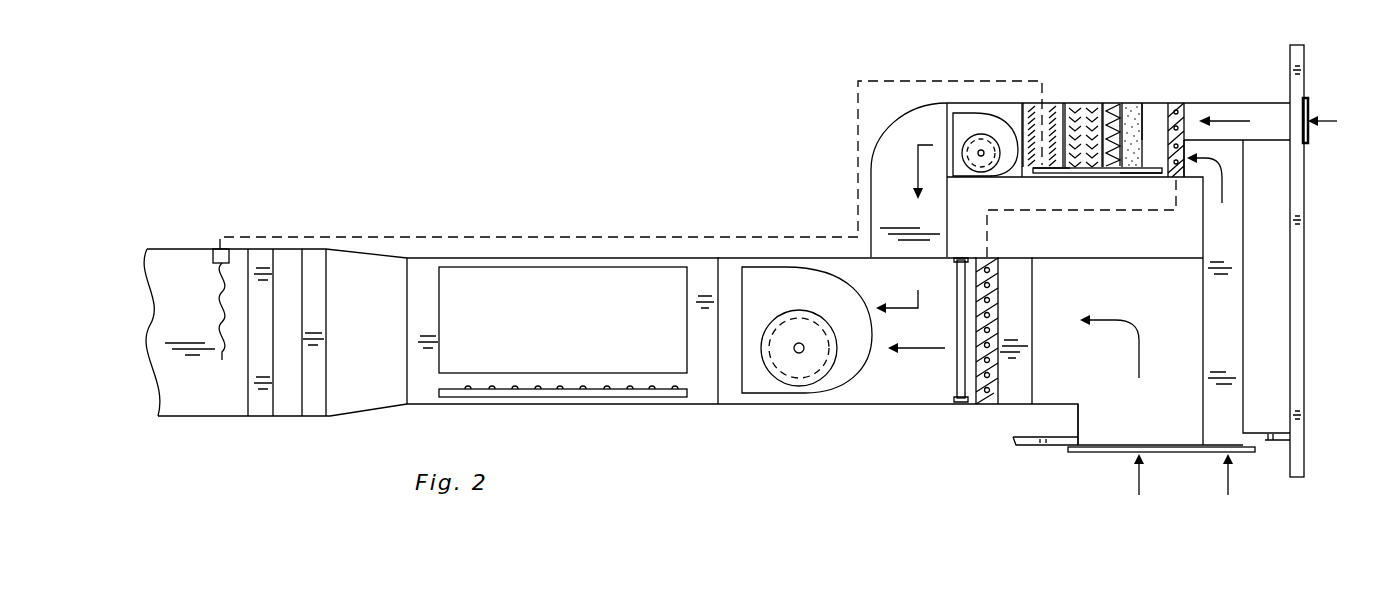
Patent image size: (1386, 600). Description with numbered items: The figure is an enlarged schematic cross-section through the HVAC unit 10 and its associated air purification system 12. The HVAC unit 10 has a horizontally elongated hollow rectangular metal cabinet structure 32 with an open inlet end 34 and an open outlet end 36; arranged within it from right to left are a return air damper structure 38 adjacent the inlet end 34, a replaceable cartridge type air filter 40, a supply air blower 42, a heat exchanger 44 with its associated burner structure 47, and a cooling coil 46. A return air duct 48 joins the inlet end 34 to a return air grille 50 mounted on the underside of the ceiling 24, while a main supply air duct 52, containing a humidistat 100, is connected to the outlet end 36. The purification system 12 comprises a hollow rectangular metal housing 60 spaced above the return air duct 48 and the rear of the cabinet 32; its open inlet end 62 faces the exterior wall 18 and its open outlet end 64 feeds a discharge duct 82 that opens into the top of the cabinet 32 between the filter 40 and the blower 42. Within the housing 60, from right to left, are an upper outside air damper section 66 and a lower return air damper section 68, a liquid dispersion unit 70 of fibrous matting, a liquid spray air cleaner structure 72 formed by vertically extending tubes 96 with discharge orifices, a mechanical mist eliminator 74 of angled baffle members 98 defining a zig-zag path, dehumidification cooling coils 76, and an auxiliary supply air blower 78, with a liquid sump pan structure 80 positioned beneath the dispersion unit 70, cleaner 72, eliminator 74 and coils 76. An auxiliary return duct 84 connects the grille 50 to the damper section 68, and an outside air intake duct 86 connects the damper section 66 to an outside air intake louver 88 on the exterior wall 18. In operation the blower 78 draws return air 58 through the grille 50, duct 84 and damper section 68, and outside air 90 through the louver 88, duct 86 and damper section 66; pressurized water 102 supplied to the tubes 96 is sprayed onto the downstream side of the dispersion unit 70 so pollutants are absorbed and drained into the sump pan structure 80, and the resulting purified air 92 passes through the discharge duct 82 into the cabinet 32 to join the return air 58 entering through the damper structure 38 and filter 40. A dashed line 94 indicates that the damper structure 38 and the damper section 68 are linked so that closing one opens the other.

The HVAC unit 10 is at (828, 412).
The air purification system 12 is at (1067, 96).
The exterior wall 18 is at (1302, 282).
The ceiling 24 is at (1027, 447).
The cabinet structure 32 is at (731, 249).
The inlet end 34 is at (1033, 277).
The outlet end 36 is at (249, 395).
The return air damper structure 38 is at (1000, 310).
The air filter 40 is at (961, 402).
The supply air blower 42 is at (863, 298).
The heat exchanger 44 is at (523, 267).
The cooling coil 46 is at (298, 248).
The burner structure 47 is at (601, 397).
The return air duct 48 is at (1078, 416).
The return air grille 50 is at (1098, 453).
The main supply air duct 52 is at (190, 248).
The return air 58 is at (920, 349).
The housing 60 is at (992, 96).
The inlet end 62 is at (1186, 116).
The outlet end 64 is at (935, 118).
The outside air damper section 66 is at (1182, 105).
The return air damper section 68 is at (1184, 170).
The liquid dispersion unit 70 is at (1142, 103).
The liquid spray air cleaner structure 72 is at (1105, 103).
The mechanical mist eliminator 74 is at (1092, 103).
The dehumidification cooling coils 76 is at (1043, 103).
The auxiliary supply air blower 78 is at (960, 113).
The liquid sump pan structure 80 is at (1082, 173).
The discharge duct 82 is at (858, 229).
The auxiliary return duct 84 is at (1244, 353).
The outside air intake duct 86 is at (1270, 103).
The outside air intake louver 88 is at (1310, 103).
The outside air 90 is at (1237, 121).
The purified air 92 is at (918, 309).
The dashed line 94 is at (1122, 212).
The tubes 96 is at (1106, 174).
The baffle members 98 is at (1066, 170).
The humidistat 100 is at (213, 261).
The pressurized water 102 is at (1118, 103).